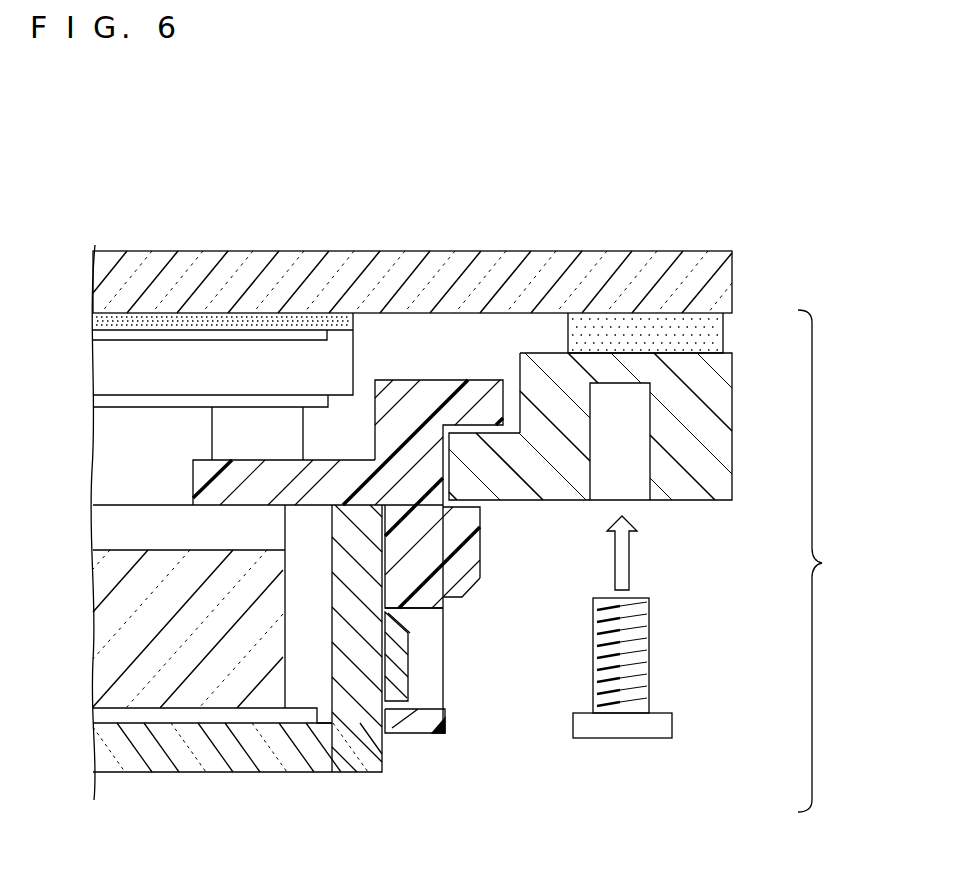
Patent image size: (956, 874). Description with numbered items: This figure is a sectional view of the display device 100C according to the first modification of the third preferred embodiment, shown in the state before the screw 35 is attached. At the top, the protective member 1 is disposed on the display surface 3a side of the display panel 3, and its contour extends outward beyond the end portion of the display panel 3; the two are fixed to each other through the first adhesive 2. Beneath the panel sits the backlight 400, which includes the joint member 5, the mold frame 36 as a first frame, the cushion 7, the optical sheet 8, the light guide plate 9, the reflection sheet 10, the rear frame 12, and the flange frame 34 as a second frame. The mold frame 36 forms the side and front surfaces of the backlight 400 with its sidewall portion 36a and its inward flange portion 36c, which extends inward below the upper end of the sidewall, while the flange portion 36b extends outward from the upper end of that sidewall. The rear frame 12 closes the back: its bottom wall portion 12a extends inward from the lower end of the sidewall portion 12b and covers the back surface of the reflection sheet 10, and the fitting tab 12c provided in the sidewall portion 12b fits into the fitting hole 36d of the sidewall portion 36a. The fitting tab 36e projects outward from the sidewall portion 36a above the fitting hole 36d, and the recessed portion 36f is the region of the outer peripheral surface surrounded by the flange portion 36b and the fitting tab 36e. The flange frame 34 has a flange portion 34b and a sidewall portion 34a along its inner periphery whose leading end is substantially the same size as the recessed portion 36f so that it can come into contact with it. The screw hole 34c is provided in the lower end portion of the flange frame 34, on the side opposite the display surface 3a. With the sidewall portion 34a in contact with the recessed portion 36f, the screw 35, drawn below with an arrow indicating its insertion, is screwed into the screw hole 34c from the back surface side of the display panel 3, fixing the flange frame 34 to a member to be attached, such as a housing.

The display device 100C is at (112, 125).
The protective member 1 is at (735, 284).
The first adhesive 2 is at (93, 318).
The display panel 3 is at (86, 330).
The display surface 3a is at (258, 332).
The joint member 5 is at (723, 343).
The cushion 7 is at (220, 432).
The optical sheet 8 is at (100, 527).
The light guide plate 9 is at (100, 652).
The reflection sheet 10 is at (100, 717).
The rear frame 12 is at (272, 681).
The bottom wall portion 12a is at (100, 750).
The sidewall portion 12b is at (348, 650).
The fitting tab 12c is at (395, 660).
The flange frame 34 is at (620, 470).
The sidewall portion 34a is at (502, 467).
The flange portion 34b is at (718, 433).
The screw hole 34c is at (645, 475).
The screw 35 is at (672, 723).
The mold frame 36 is at (291, 522).
The sidewall portion 36a is at (397, 542).
The flange portion 36b is at (467, 390).
The flange portion 36c is at (192, 481).
The fitting hole 36d is at (422, 613).
The fitting tab 36e is at (462, 572).
The recessed portion 36f is at (485, 508).
The backlight 400 is at (830, 561).